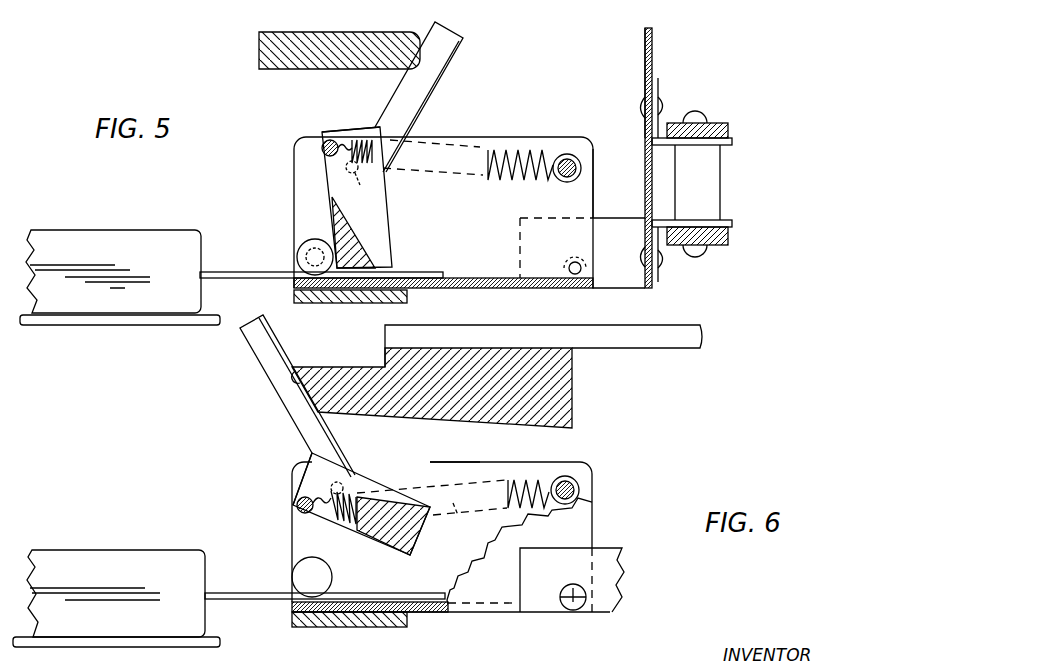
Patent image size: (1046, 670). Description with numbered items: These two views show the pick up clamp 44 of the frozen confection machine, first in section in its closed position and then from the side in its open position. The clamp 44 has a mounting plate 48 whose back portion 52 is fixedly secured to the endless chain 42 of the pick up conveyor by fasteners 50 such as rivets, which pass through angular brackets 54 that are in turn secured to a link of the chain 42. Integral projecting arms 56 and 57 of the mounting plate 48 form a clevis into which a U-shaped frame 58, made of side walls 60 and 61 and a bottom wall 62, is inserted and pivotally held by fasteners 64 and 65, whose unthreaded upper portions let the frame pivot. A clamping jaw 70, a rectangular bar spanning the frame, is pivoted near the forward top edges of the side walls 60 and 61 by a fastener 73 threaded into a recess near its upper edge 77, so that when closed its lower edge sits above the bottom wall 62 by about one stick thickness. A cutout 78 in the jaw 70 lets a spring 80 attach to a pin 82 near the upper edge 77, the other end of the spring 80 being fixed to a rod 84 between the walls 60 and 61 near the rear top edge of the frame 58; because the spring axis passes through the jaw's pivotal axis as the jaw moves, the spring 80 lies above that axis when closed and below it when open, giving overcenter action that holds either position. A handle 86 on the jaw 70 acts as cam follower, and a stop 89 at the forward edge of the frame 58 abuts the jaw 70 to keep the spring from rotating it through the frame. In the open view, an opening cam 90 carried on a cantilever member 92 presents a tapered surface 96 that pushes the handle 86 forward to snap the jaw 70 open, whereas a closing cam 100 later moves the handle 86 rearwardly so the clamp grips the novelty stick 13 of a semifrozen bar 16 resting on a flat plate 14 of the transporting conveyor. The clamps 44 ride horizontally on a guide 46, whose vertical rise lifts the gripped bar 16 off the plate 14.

In FIG. 5, the novelty stick 13 is at (240, 272).
In FIG. 6, the novelty stick 13 is at (245, 594).
In FIG. 5, the flat plate 14 is at (112, 318).
In FIG. 6, the flat plate 14 is at (108, 640).
In FIG. 5, the semifrozen extruded bar 16 is at (120, 235).
In FIG. 6, the semifrozen extruded bar 16 is at (125, 562).
In FIG. 5, the endless chain 42 is at (730, 130).
In FIG. 5, the clamp 44 is at (536, 117).
In FIG. 6, the clamp 44 is at (597, 498).
In FIG. 5, the guide 46 is at (369, 291).
In FIG. 6, the guide 46 is at (375, 624).
In FIG. 5, the mounting plate 48 is at (654, 42).
In FIG. 5, the fasteners 50 is at (663, 101).
In FIG. 5, the back portion 52 is at (645, 56).
In FIG. 5, the angular brackets 54 is at (710, 225).
In FIG. 6, the projecting arm 56 is at (604, 578).
In FIG. 5, the projecting arm 57 is at (613, 226).
In FIG. 5, the U-shaped frame 58 is at (496, 138).
In FIG. 6, the U-shaped frame 58 is at (528, 494).
In FIG. 6, the side wall 60 is at (568, 529).
In FIG. 5, the side wall 61 is at (586, 156).
In FIG. 6, the side wall 61 is at (460, 470).
In FIG. 5, the bottom wall 62 is at (487, 278).
In FIG. 6, the bottom wall 62 is at (432, 613).
In FIG. 6, the fastener 64 is at (567, 611).
In FIG. 5, the fastener 65 is at (572, 263).
In FIG. 5, the clamping jaw 70 is at (390, 204).
In FIG. 6, the clamping jaw 70 is at (377, 480).
In FIG. 5, the fastener 73 is at (356, 183).
In FIG. 6, the fastener 73 is at (337, 488).
In FIG. 5, the upper edge 77 is at (352, 128).
In FIG. 6, the upper edge 77 is at (304, 470).
In FIG. 5, the cutout 78 is at (372, 248).
In FIG. 6, the cutout 78 is at (313, 486).
In FIG. 5, the spring 80 is at (438, 173).
In FIG. 6, the spring 80 is at (432, 511).
In FIG. 5, the pin 82 is at (322, 150).
In FIG. 6, the pin 82 is at (298, 507).
In FIG. 5, the rod 84 is at (568, 152).
In FIG. 6, the rod 84 is at (579, 481).
In FIG. 5, the handle 86 is at (459, 49).
In FIG. 6, the handle 86 is at (268, 369).
In FIG. 5, the stop 89 is at (305, 254).
In FIG. 6, the stop 89 is at (314, 577).
In FIG. 6, the opening cam 90 is at (575, 406).
In FIG. 6, the cantilever member 92 is at (688, 342).
In FIG. 6, the tapered surface 96 is at (297, 374).
In FIG. 5, the closing cam 100 is at (257, 48).